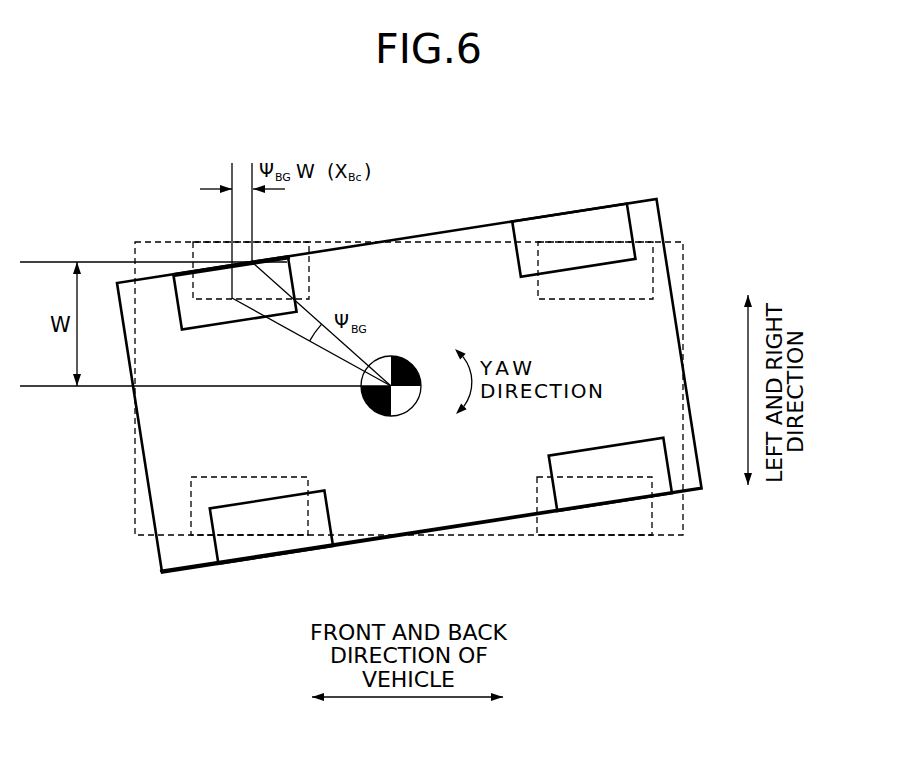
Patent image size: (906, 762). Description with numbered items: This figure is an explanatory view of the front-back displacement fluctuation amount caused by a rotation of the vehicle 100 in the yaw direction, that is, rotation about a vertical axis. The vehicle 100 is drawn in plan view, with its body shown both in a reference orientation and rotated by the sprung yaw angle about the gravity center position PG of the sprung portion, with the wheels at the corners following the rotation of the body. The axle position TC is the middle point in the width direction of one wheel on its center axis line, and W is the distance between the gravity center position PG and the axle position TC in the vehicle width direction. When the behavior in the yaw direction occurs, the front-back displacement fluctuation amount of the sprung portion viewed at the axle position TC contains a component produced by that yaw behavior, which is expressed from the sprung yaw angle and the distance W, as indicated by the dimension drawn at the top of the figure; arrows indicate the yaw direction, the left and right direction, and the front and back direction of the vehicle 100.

The vehicle 100 is at (409, 364).
The axle position TC is at (157, 378).
The gravity center position PG is at (412, 407).